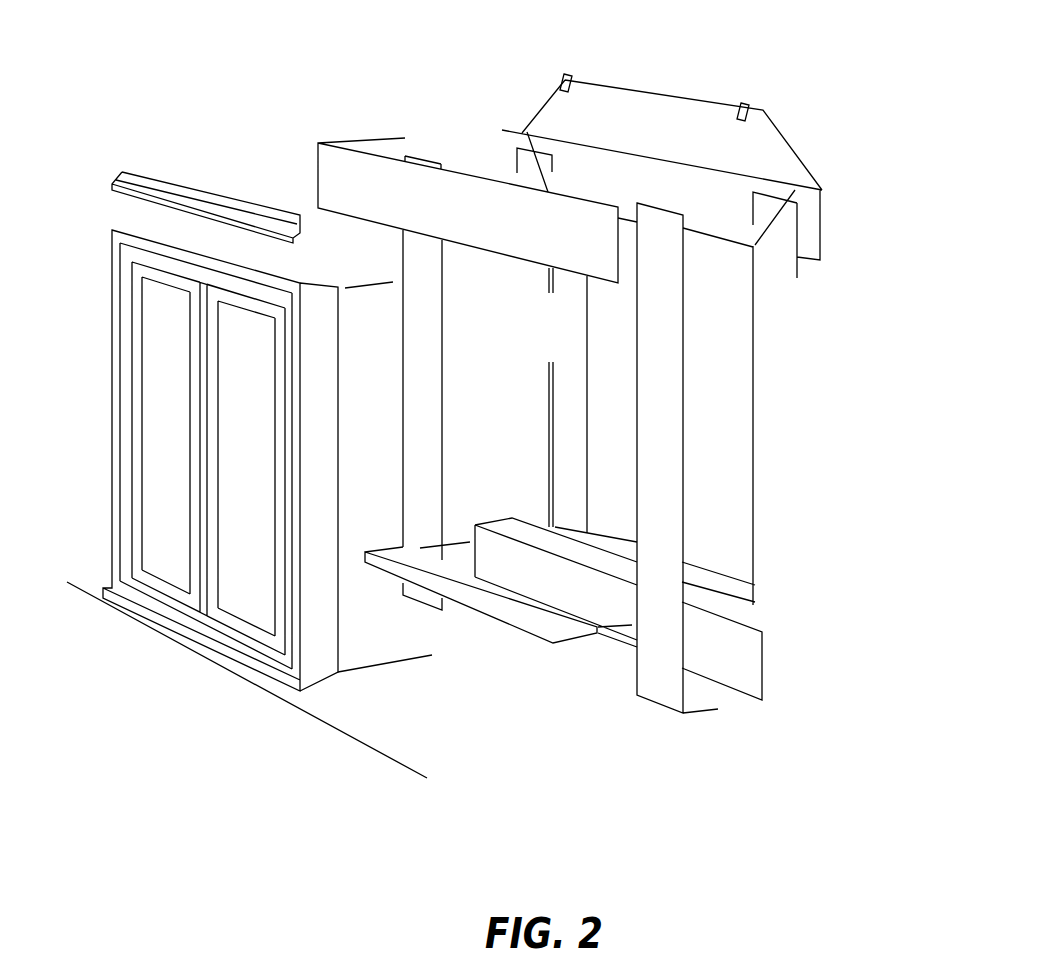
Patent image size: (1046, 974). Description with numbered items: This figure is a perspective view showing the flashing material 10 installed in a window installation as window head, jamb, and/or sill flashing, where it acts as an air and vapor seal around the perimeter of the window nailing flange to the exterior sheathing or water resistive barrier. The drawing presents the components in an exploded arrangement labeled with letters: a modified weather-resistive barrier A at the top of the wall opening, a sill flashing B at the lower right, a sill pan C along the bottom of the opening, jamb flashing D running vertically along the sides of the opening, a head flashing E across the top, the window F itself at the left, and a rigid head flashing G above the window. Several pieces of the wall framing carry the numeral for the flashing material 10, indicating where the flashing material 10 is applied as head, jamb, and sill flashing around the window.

The modified weather-resistive barrier A is at (777, 120).
The sill flashing B is at (763, 695).
The sill pan C is at (545, 648).
The jamb flashing D is at (633, 480).
The head flashing E is at (463, 168).
The window F is at (190, 647).
The rigid head flashing G is at (183, 183).
The flashing material 10 is at (485, 222).